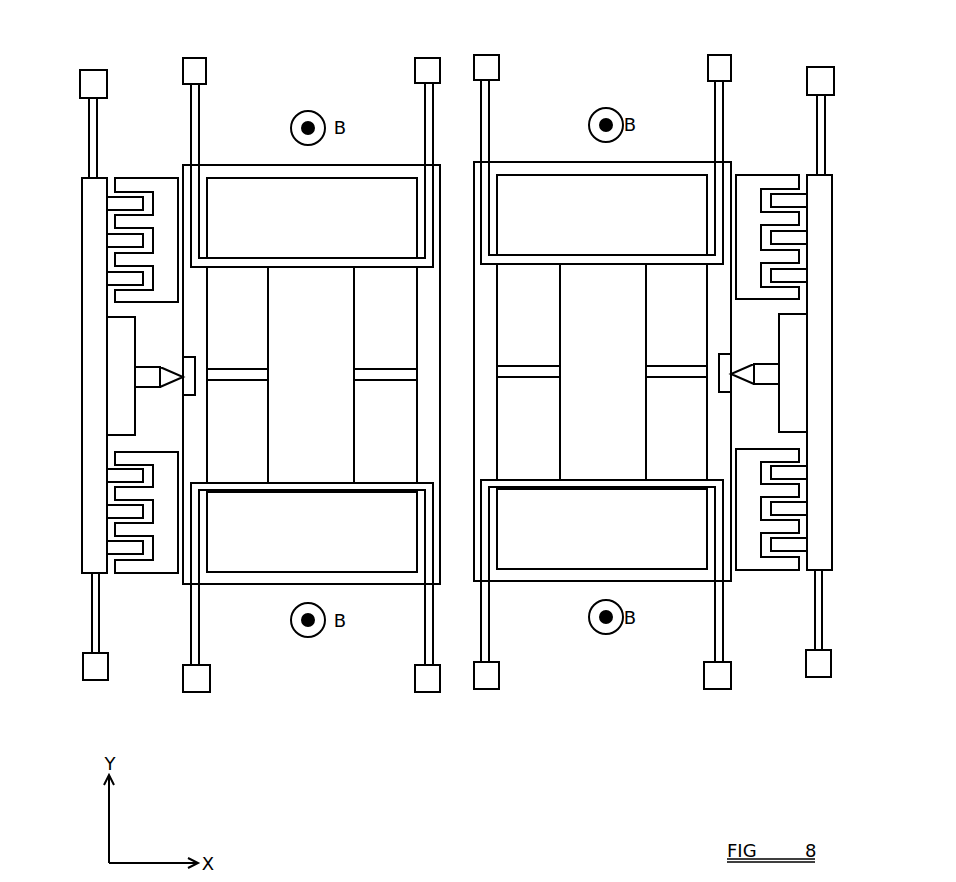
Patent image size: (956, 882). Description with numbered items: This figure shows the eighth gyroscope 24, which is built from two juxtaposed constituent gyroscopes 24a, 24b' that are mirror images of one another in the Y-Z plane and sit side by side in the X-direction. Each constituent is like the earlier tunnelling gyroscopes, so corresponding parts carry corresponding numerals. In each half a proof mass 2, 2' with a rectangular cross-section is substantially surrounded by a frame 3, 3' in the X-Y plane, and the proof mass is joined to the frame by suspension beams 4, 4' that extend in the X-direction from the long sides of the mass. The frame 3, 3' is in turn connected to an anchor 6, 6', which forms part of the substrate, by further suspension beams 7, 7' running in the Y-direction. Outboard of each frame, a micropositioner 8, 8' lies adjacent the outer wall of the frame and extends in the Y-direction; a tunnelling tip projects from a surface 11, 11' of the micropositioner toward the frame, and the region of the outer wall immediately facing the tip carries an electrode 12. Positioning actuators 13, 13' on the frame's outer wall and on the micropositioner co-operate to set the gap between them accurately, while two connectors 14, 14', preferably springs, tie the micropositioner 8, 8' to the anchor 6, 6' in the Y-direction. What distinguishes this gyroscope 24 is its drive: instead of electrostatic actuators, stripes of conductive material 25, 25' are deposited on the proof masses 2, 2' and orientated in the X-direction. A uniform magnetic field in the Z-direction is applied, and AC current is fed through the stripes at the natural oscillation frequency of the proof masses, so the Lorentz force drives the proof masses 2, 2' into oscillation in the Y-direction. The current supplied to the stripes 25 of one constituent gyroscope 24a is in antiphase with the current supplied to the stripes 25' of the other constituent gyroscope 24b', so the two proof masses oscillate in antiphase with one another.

The proof mass 2 is at (332, 375).
The frame 3 is at (311, 374).
The suspension beams 4 is at (312, 428).
The anchor 6 is at (260, 54).
The further suspension beams 7 is at (312, 165).
The micropositioner 8 is at (69, 377).
The surface of the micropositioner 11 is at (87, 391).
The electrode 12 is at (185, 362).
The positioning actuators 13 is at (112, 240).
The connectors 14 is at (69, 138).
The eighth gyroscope 24 is at (70, 185).
The constituent gyroscope 24a is at (69, 485).
The stripes of conductive material 25 is at (311, 375).
The proof mass 2' is at (623, 372).
The frame 3' is at (602, 371).
The suspension beams 4' is at (602, 423).
The anchor 6' is at (654, 50).
The further suspension beams 7' is at (602, 163).
The micropositioner 8' is at (841, 374).
The surface of the micropositioner 11' is at (824, 373).
The positioning actuators 13' is at (804, 237).
The connectors 14' is at (850, 130).
The constituent gyroscope 24b' is at (817, 505).
The stripes of conductive material 25' is at (603, 372).